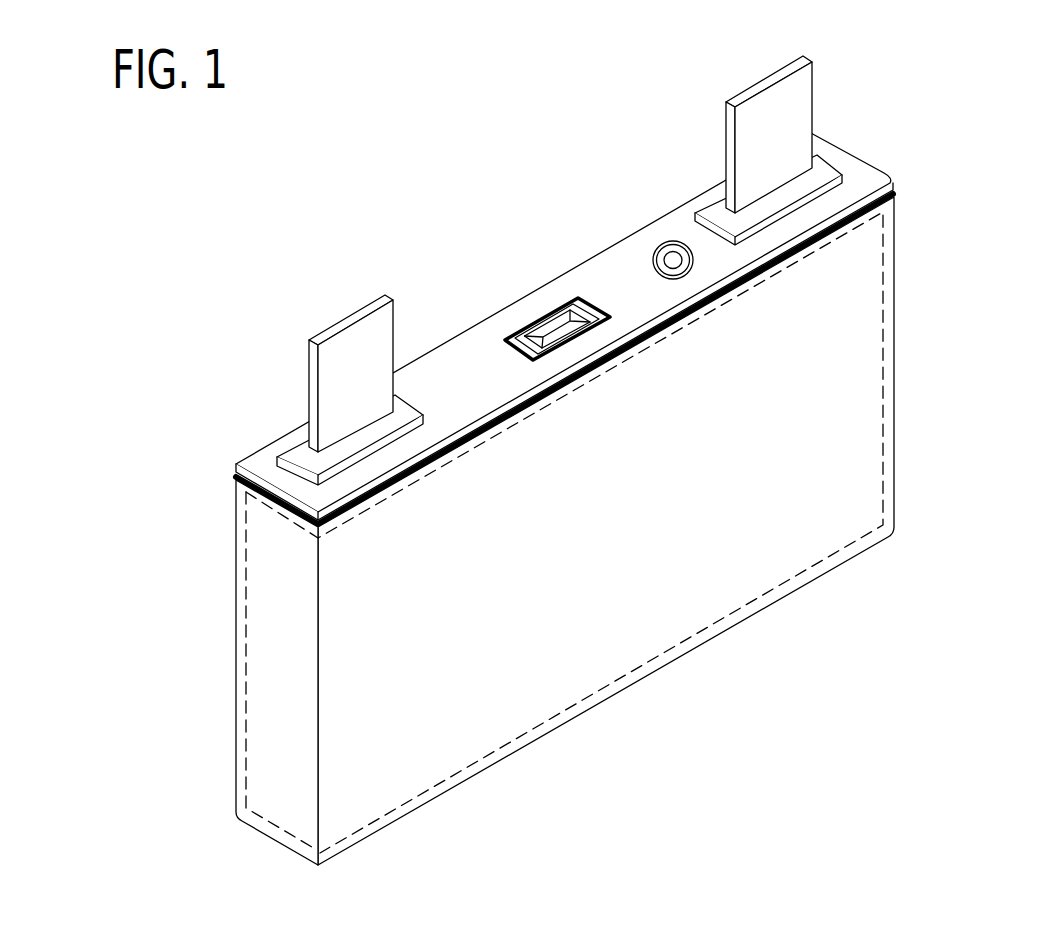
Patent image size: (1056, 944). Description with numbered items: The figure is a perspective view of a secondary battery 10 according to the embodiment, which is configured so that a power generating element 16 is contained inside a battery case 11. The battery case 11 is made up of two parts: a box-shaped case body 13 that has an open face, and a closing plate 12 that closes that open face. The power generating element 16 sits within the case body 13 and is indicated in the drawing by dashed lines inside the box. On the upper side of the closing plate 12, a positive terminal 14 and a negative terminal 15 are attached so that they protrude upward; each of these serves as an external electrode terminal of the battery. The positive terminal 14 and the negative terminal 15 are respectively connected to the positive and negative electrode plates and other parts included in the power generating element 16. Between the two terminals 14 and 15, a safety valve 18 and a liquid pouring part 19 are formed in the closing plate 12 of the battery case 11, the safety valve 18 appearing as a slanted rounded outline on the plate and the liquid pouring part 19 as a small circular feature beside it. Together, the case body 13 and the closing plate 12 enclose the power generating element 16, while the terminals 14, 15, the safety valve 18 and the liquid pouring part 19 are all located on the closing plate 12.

The secondary battery 10 is at (376, 204).
The battery case 11 is at (963, 151).
The closing plate 12 is at (860, 162).
The case body 13 is at (895, 264).
The positive terminal 14 is at (752, 142).
The negative terminal 15 is at (337, 378).
The power generating element 16 is at (482, 742).
The safety valve 18 is at (540, 337).
The liquid pouring part 19 is at (657, 247).